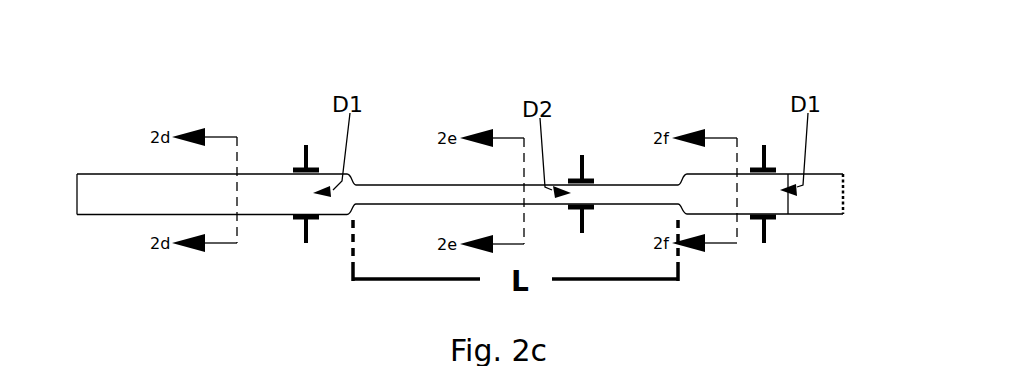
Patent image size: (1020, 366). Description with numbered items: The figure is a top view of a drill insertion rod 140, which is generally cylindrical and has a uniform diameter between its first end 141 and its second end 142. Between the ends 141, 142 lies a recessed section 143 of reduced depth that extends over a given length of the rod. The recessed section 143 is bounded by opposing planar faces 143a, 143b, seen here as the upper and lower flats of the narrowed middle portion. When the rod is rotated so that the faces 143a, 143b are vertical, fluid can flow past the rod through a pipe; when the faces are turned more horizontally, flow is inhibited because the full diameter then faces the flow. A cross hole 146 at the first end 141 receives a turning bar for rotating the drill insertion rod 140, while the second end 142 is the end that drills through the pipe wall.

The drill insertion rod 140 is at (287, 104).
The first end 141 is at (127, 215).
The second end 142 is at (830, 174).
The recessed section 143 is at (423, 184).
The planar face 143a is at (398, 205).
The planar face 143b is at (382, 184).
The cross hole 146 is at (92, 174).